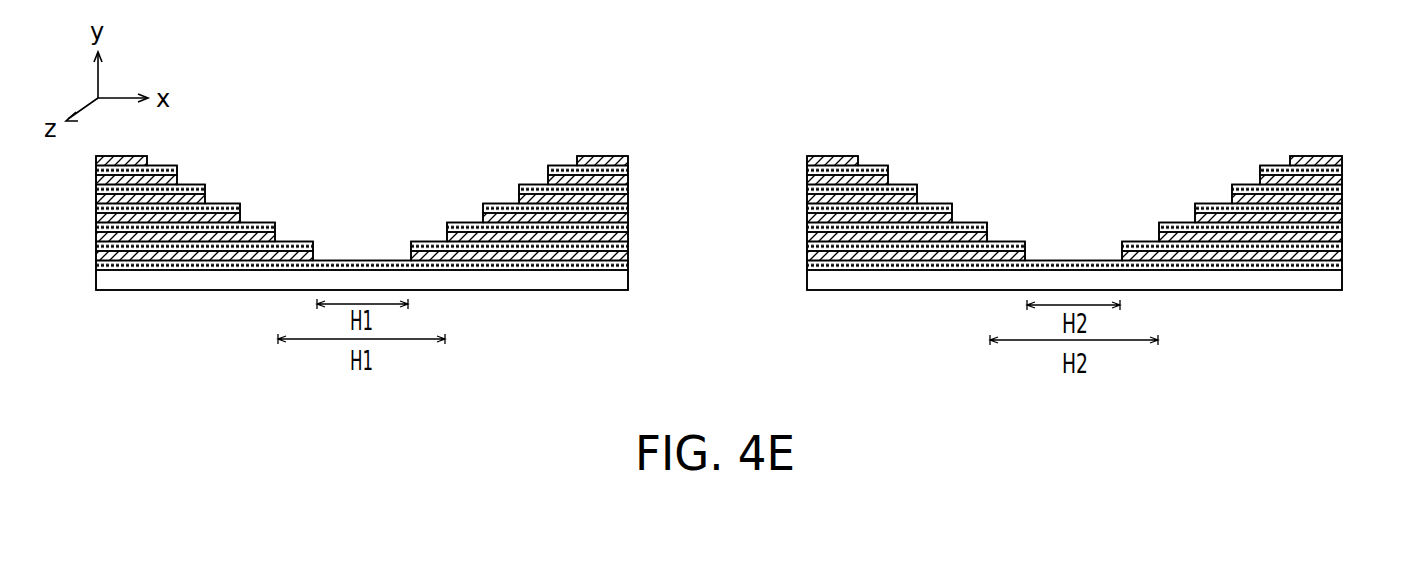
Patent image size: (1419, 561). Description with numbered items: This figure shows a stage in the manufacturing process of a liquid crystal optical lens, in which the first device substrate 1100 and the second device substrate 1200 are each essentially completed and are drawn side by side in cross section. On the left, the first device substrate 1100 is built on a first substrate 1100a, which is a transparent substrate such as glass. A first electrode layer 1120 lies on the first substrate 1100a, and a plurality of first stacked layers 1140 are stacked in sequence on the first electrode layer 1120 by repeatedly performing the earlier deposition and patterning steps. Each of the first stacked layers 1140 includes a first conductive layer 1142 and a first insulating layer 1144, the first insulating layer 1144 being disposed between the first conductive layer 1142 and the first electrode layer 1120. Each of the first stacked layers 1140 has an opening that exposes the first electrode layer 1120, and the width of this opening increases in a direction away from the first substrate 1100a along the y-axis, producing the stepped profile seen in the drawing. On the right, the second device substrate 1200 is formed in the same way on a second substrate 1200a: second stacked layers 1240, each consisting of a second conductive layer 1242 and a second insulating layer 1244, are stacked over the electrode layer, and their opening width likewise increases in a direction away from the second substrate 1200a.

The first device substrate 1100 is at (626, 135).
The first substrate 1100a is at (593, 285).
The first electrode layer 1120 is at (133, 263).
The first stacked layers 1140 is at (362, 282).
The first conductive layer 1142 is at (233, 245).
The first insulating layer 1144 is at (181, 255).
The second device substrate 1200 is at (1348, 137).
The second substrate 1200a is at (1328, 278).
The second stacked layers 1240 is at (1074, 270).
The second conductive layer 1242 is at (947, 245).
The second insulating layer 1244 is at (887, 255).